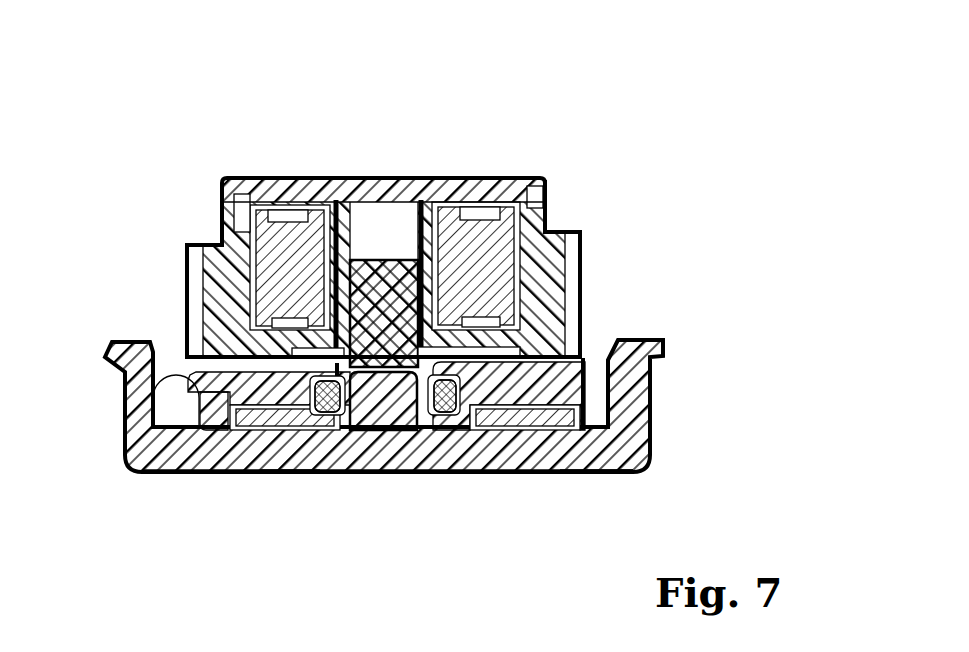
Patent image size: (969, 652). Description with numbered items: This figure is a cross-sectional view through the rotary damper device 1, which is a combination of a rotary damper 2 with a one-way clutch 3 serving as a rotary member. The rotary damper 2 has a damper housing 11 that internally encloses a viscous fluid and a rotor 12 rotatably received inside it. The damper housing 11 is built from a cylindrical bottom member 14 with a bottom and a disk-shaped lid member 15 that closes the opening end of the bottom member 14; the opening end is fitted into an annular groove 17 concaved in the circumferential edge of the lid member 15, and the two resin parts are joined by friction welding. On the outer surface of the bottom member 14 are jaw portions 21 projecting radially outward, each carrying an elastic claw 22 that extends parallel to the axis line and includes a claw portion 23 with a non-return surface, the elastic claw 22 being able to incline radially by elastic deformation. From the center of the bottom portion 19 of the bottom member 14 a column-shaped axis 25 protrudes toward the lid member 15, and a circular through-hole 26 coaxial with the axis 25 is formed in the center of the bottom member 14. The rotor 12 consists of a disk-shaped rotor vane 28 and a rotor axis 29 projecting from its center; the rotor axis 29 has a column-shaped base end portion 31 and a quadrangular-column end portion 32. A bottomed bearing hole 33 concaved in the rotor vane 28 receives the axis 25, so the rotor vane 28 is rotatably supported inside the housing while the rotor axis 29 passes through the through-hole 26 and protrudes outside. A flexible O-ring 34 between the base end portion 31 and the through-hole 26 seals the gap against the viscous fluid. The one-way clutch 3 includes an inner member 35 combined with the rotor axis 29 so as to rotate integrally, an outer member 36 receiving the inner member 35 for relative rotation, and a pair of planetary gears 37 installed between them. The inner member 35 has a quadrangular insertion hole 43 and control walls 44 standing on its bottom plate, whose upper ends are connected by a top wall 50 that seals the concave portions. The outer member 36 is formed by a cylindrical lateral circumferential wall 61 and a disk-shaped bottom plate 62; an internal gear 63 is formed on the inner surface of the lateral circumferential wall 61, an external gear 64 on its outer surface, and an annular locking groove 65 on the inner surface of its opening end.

The rotary damper device 1 is at (395, 301).
The rotary damper 2 is at (395, 455).
The one-way clutch 3 is at (385, 217).
The damper housing 11 is at (531, 480).
The rotor 12 is at (391, 254).
The bottom member 14 is at (204, 458).
The lid member 15 is at (145, 395).
The annular groove 17 is at (200, 421).
The bottom portion 19 is at (318, 440).
The jaw portion 21 is at (597, 458).
The elastic claw 22 is at (640, 428).
The claw portion 23 is at (650, 346).
The axis 25 is at (360, 398).
The through-hole 26 is at (436, 414).
The rotor vane 28 is at (258, 432).
The rotor axis 29 is at (374, 262).
The base end portion 31 is at (374, 412).
The end portion 32 is at (360, 290).
The bearing hole 33 is at (448, 432).
The O-ring 34 is at (290, 456).
The inner member 35 is at (502, 178).
The outer member 36 is at (550, 230).
The planetary gear 37 is at (262, 214).
The insertion hole 43 is at (562, 338).
The control wall 44 is at (338, 262).
The top wall 50 is at (306, 192).
The lateral circumferential wall 61 is at (234, 225).
The bottom plate 62 is at (268, 322).
The internal gear 63 is at (239, 190).
The external gear 64 is at (212, 268).
The locking groove 65 is at (546, 208).